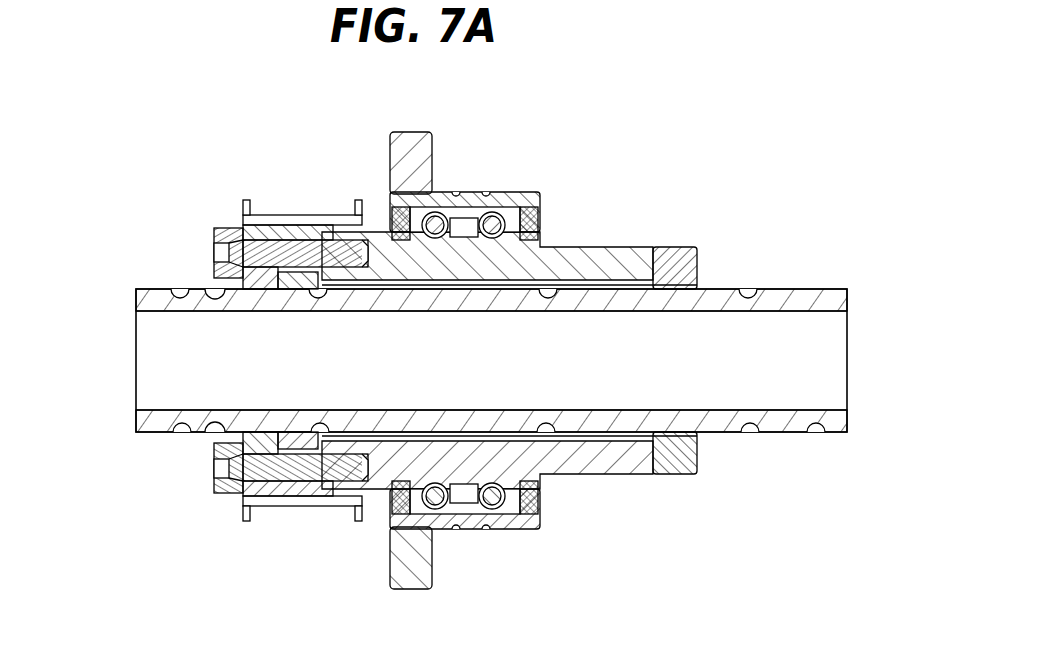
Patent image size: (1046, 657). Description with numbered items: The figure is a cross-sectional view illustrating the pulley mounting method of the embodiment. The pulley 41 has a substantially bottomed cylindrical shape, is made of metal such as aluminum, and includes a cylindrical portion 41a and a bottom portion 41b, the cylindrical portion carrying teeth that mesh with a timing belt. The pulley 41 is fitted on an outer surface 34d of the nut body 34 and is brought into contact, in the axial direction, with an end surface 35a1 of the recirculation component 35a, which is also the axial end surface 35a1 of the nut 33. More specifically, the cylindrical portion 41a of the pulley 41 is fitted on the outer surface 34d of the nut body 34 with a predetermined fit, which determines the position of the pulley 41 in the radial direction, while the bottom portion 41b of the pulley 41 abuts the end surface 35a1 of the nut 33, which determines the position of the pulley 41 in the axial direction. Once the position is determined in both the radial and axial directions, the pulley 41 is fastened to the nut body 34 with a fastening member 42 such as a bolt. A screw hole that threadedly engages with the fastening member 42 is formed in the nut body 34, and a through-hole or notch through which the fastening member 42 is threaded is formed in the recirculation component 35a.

The nut 33 is at (655, 201).
The nut body 34 is at (533, 263).
The outer surface of the nut body 34d is at (378, 228).
The pulley 41 is at (272, 213).
The cylindrical portion 41a is at (336, 226).
The bottom portion 41b is at (248, 257).
The recirculation component 35a is at (300, 281).
The end surface 35a1 is at (217, 289).
The fastening member 42 is at (214, 233).